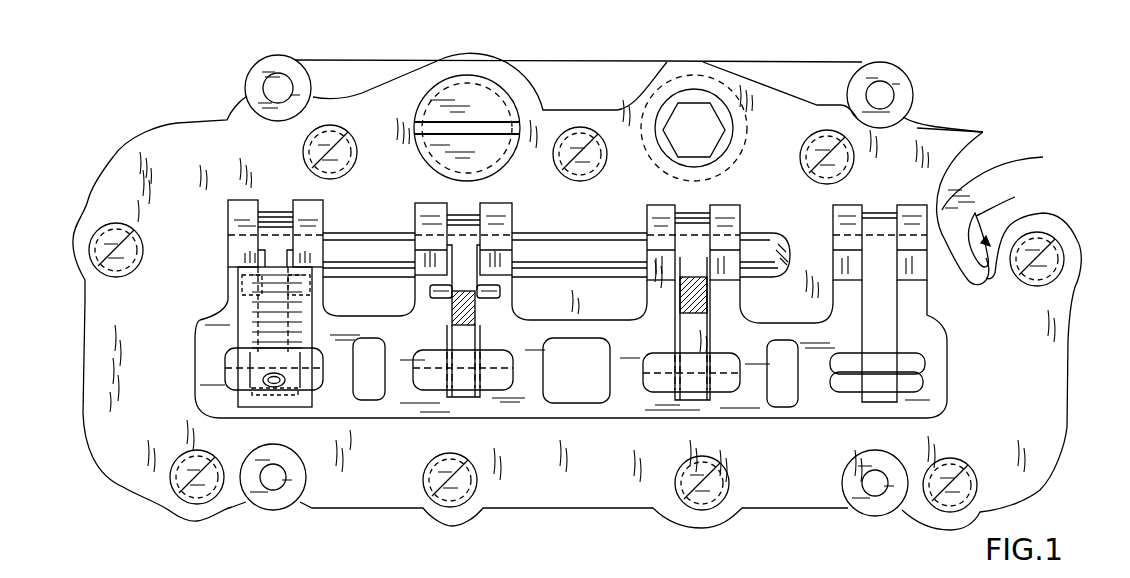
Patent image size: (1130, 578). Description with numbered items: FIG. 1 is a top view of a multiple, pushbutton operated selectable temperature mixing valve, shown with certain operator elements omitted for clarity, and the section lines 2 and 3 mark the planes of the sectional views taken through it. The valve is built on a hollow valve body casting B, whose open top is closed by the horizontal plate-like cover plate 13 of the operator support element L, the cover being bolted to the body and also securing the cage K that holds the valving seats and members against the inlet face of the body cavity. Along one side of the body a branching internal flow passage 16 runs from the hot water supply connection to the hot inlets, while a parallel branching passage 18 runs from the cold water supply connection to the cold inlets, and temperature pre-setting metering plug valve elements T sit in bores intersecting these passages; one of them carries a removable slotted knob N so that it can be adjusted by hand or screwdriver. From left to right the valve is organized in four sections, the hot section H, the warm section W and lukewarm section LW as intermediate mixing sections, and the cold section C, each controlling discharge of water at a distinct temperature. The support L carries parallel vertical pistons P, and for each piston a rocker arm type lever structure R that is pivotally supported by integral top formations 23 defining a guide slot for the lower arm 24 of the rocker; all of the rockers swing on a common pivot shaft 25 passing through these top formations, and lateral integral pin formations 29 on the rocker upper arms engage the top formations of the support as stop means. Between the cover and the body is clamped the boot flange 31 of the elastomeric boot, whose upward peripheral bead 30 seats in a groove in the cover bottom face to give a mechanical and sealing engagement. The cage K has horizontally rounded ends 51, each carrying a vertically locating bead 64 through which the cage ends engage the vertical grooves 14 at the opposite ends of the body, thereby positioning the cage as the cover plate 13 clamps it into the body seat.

The section line 2- 2 is at (323, 537).
The section line 3- 3 is at (548, 527).
The plate-like support portion 13 is at (240, 155).
The vertical grooves 14 is at (970, 282).
The branching internal flow passage 16 is at (350, 66).
The parallel branching passage 18 is at (805, 66).
The integral top formations 23 is at (300, 200).
The lower arm 24 is at (460, 338).
The common pivot shaft 25 is at (375, 233).
The lateral integral pin formations 29 is at (242, 287).
The upward peripheral bead 30 is at (985, 132).
The boot flange 31 is at (1060, 195).
The horizontally rounded ends 51 is at (1005, 224).
The vertically locating bead 64 is at (995, 274).
The removable slotted knob N is at (444, 79).
The temperature pre-setting metering plug valve elements T is at (498, 97).
The cage K is at (935, 111).
The valve body casting B is at (1043, 214).
The operator support element L is at (1077, 288).
The rocker arm type lever structure R is at (223, 314).
The pistons P is at (223, 363).
The hot section H is at (273, 491).
The warm section W is at (450, 501).
The lukewarm section LW is at (702, 503).
The cold section C is at (875, 500).